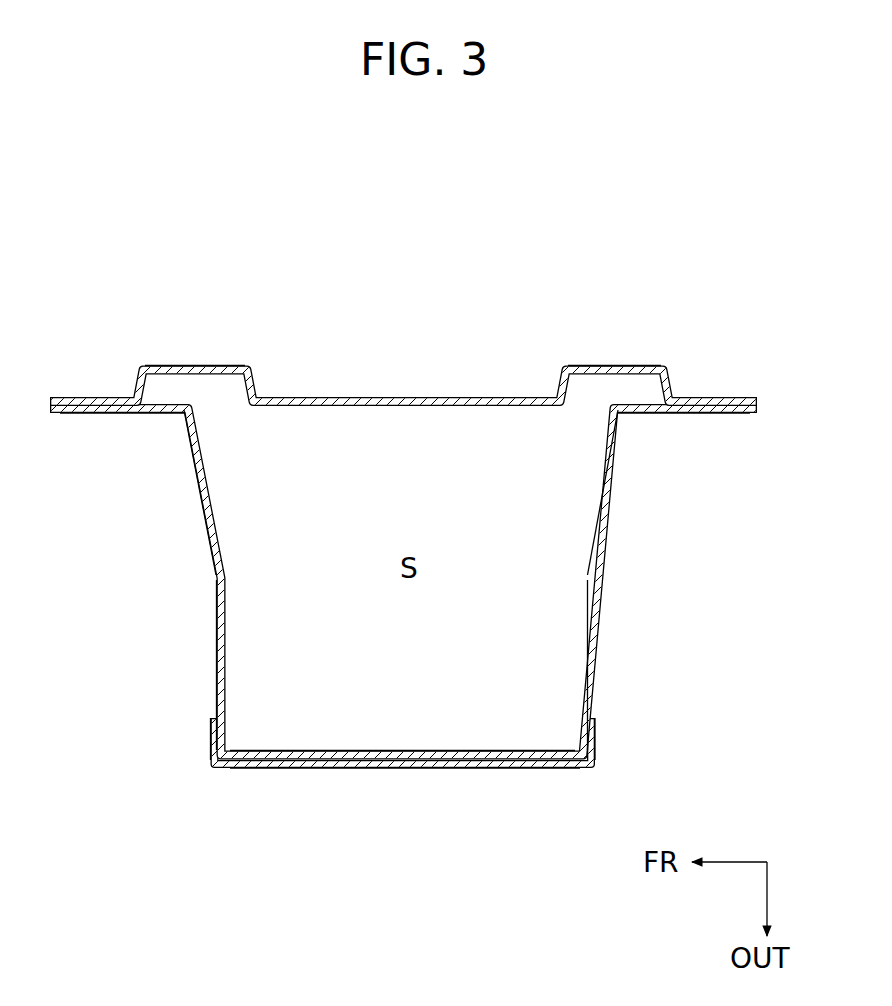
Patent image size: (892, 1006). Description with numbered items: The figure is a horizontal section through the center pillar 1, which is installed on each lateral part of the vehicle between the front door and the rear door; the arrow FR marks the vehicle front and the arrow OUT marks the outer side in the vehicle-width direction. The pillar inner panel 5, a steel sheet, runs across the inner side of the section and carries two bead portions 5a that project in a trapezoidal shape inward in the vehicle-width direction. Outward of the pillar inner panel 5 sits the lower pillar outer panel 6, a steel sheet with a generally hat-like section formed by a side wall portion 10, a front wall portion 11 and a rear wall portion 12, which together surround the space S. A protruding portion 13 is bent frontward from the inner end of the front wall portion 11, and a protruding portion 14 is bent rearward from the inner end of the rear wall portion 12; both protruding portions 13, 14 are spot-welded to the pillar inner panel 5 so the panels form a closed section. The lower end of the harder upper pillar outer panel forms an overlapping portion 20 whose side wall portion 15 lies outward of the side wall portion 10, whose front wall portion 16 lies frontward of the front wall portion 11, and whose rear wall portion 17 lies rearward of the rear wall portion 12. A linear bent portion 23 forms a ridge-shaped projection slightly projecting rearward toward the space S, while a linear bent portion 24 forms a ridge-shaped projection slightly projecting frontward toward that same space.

The center pillar 1 is at (222, 254).
The pillar inner panel 5 is at (390, 396).
The bead portion 5a is at (190, 365).
The lower pillar outer panel 6 is at (616, 496).
The side wall portion 10 is at (413, 751).
The front wall portion 11 is at (203, 497).
The rear wall portion 12 is at (598, 530).
The protruding portion 13 is at (160, 407).
The protruding portion 14 is at (655, 407).
The side wall portion 15 is at (443, 769).
The front wall portion 16 is at (211, 731).
The rear wall portion 17 is at (596, 735).
The overlapping portion 20 is at (319, 776).
The linear bent portion 23 is at (219, 578).
The linear bent portion 24 is at (588, 580).